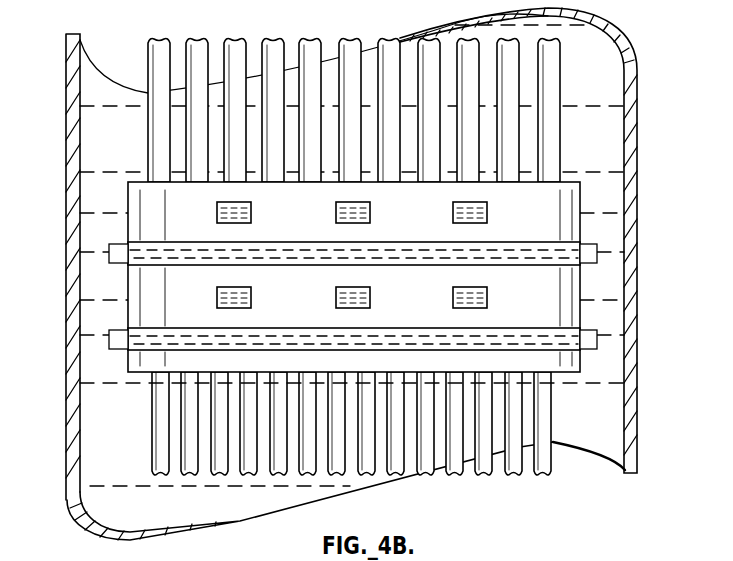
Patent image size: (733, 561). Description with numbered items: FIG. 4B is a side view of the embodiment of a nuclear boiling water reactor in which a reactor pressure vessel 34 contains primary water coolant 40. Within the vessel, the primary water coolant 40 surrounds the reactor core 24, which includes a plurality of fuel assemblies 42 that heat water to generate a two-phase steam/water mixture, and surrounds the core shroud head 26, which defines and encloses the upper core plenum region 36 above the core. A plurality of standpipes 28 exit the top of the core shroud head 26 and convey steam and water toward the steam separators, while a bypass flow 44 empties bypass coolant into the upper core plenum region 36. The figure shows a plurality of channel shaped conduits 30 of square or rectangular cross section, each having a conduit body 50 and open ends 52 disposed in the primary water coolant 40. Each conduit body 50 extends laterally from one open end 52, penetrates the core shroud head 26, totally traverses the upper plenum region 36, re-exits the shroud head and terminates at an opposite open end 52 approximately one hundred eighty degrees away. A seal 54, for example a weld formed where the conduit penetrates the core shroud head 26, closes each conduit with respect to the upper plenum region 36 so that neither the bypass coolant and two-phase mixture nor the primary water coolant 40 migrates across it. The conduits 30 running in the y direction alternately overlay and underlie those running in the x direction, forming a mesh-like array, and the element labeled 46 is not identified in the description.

The container bottom 24 is at (553, 440).
The housing plates 26 is at (580, 205).
The upper cooling fins 28 is at (519, 118).
The electronic components 30 is at (372, 211).
The container wall 34 is at (636, 311).
The inner plate 36 is at (137, 207).
The liquid level 40 is at (610, 394).
The lower cooling fins 42 is at (495, 420).
The fin 44 is at (150, 458).
The upper tube 46 is at (148, 266).
The lower tube 50 is at (153, 354).
The tube end cap 52 is at (108, 340).
The tube end cap 54 is at (583, 242).